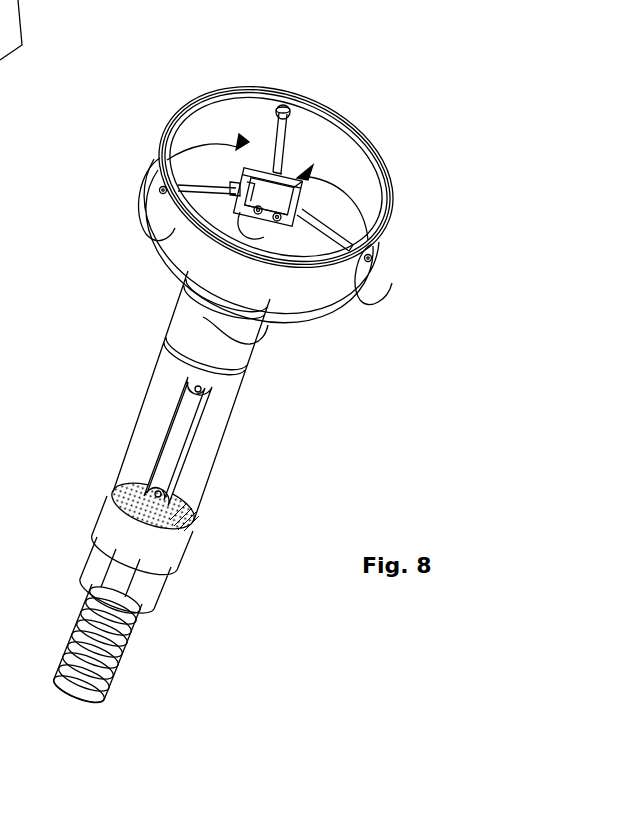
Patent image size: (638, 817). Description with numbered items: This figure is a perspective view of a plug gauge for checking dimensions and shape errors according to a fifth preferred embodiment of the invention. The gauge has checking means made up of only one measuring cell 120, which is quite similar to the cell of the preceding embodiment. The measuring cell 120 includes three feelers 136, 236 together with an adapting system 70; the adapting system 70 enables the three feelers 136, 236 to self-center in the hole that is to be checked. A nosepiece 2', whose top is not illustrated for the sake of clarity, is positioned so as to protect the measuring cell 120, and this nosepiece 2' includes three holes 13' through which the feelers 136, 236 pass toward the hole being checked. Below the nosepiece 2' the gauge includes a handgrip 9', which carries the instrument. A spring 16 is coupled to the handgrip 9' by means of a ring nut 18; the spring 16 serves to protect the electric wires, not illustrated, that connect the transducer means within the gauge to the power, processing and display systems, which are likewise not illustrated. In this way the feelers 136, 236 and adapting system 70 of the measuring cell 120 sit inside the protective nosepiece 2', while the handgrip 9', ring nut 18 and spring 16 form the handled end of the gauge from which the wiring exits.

The nosepiece 2' is at (279, 228).
The handgrip 9' is at (231, 404).
The holes 13' is at (271, 214).
The spring 16 is at (97, 655).
The ring nut 18 is at (137, 588).
The adapting system 70 is at (305, 174).
The measuring cell 120 is at (238, 140).
The feeler 136 is at (283, 112).
The feelers 236 is at (160, 187).